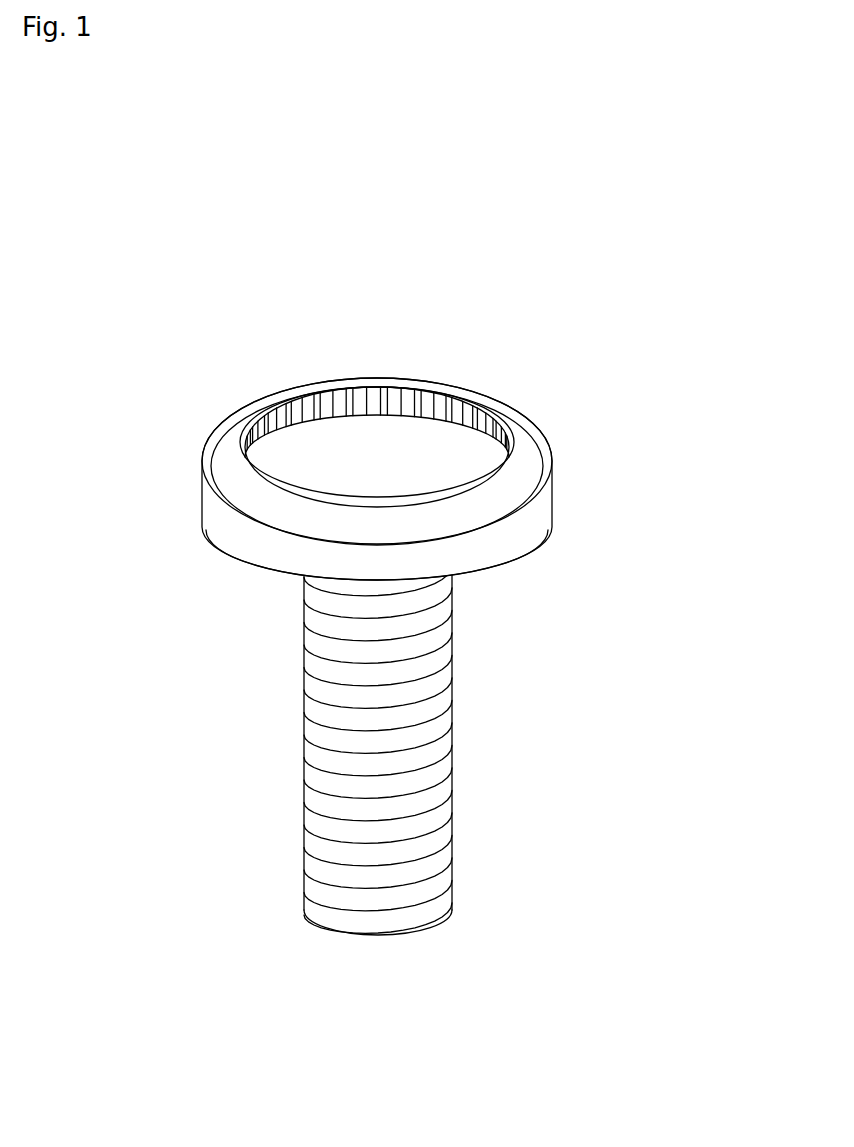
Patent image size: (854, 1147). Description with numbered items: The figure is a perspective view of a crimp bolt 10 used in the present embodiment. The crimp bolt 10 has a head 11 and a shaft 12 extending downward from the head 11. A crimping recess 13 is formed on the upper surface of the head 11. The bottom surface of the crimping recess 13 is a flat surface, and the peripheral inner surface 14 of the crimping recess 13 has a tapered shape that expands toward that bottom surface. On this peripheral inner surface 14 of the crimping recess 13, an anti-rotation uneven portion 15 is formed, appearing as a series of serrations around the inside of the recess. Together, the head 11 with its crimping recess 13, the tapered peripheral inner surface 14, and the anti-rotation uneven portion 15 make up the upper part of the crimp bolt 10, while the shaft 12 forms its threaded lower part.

The crimp bolt 10 is at (257, 347).
The head 11 is at (537, 470).
The shaft 12 is at (453, 693).
The crimping recess 13 is at (387, 437).
The peripheral inner surface 14 is at (343, 398).
The anti-rotation uneven portion 15 is at (470, 398).